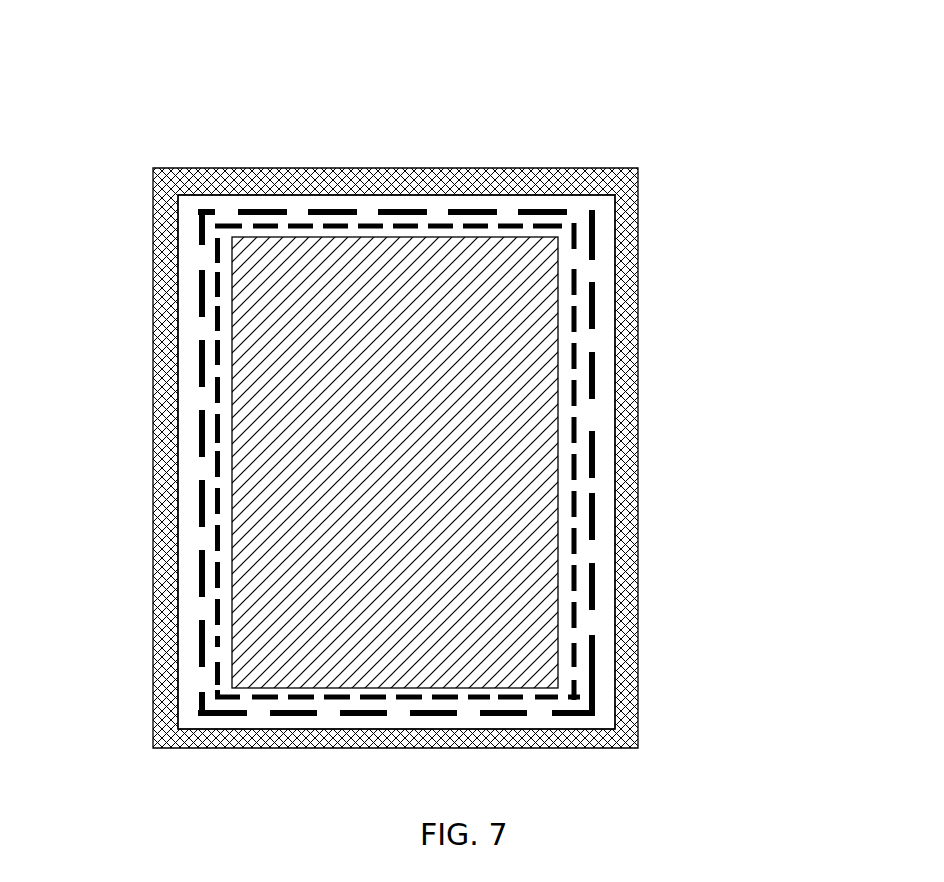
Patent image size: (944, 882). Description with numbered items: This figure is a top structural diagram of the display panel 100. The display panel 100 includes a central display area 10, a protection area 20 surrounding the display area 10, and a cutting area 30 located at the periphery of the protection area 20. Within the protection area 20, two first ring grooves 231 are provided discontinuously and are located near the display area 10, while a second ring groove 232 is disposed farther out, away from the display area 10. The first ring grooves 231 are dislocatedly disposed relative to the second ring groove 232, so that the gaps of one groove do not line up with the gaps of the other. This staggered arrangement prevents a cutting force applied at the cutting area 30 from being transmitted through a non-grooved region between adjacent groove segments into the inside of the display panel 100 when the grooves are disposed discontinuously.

The display panel 100 is at (399, 134).
The cutting area 30 is at (628, 285).
The protection area 20 is at (607, 385).
The display area 10 is at (545, 512).
The first ring groove 231 is at (217, 493).
The second ring groove 232 is at (200, 367).